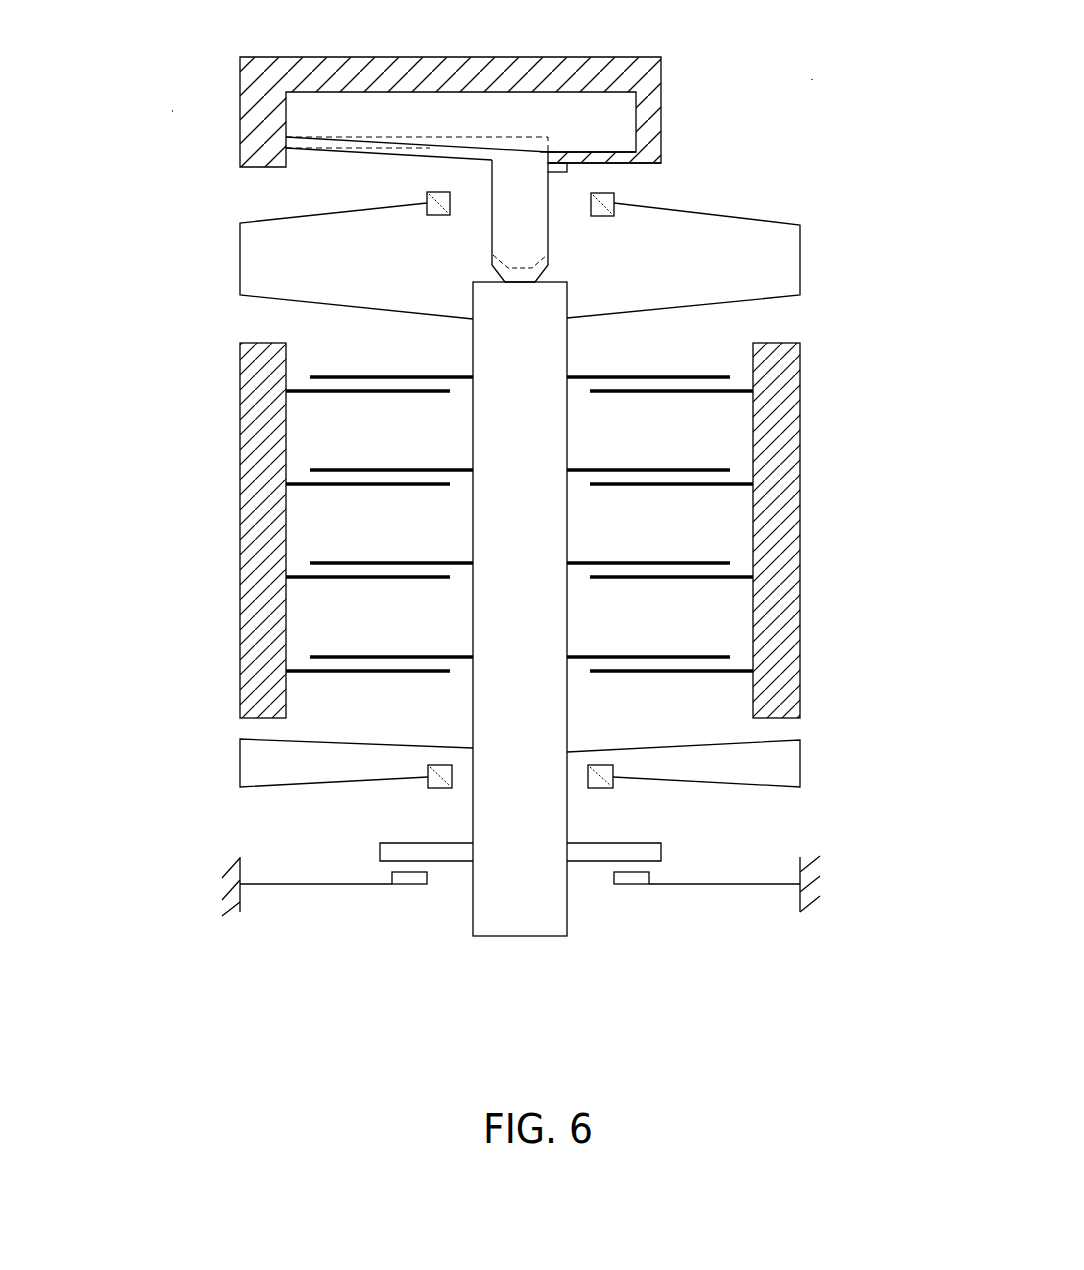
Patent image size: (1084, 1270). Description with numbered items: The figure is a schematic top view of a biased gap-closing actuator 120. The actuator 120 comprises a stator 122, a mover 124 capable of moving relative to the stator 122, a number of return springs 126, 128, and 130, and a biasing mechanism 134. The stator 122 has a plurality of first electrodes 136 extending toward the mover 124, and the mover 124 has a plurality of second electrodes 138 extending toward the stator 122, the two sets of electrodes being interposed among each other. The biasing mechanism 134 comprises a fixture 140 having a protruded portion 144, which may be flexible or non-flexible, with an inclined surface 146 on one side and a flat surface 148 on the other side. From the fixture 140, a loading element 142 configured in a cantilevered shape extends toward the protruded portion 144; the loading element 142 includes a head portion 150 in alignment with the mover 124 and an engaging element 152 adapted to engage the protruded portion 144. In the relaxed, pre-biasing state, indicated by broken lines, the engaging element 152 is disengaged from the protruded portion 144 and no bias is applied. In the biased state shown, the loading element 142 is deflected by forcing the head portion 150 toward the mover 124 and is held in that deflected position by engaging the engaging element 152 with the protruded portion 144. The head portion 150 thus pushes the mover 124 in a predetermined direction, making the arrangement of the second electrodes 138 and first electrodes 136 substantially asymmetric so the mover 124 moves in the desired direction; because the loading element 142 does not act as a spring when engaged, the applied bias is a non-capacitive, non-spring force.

The biased gap-closing actuator 120 is at (812, 80).
The stator 122 is at (777, 408).
The mover 124 is at (527, 918).
The return spring 126 is at (800, 238).
The return spring 128 is at (800, 752).
The return spring 130 is at (690, 885).
The biasing mechanism 134 is at (172, 111).
The first electrodes 136 is at (678, 392).
The second electrodes 138 is at (643, 376).
The fixture 140 is at (450, 65).
The loading element 142 is at (420, 152).
The protruded portion 144 is at (610, 155).
The inclined surface 146 is at (556, 151).
The flat surface 148 is at (610, 166).
The head portion 150 is at (515, 230).
The engaging element 152 is at (550, 174).